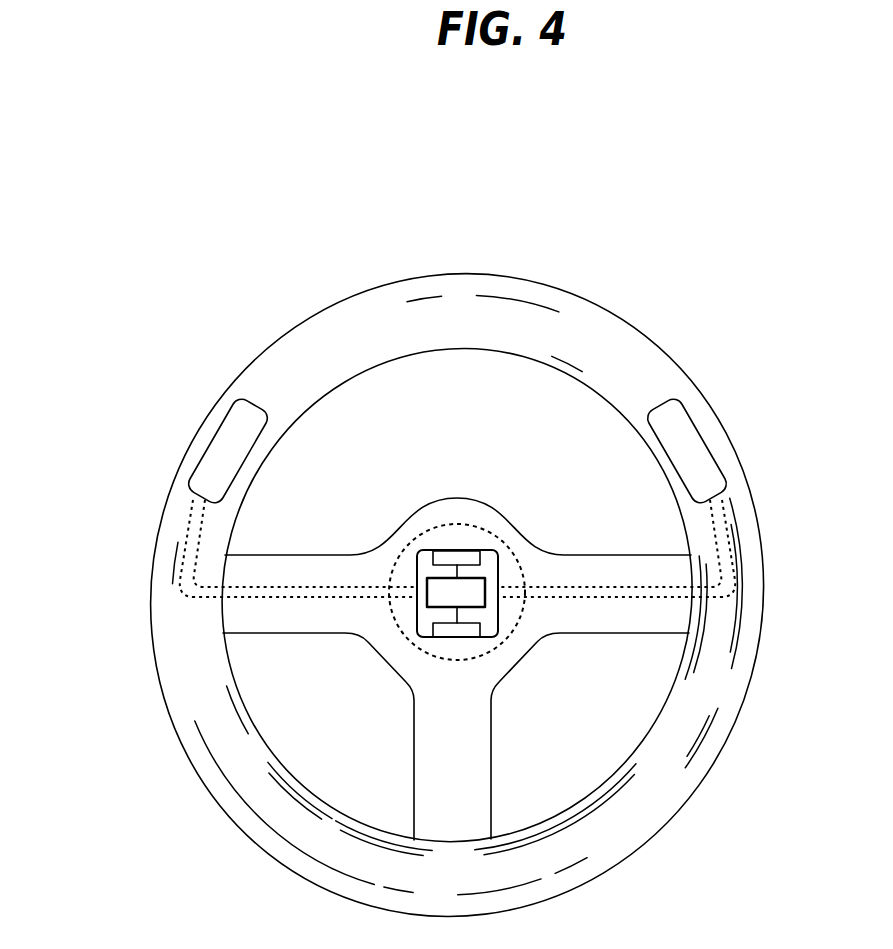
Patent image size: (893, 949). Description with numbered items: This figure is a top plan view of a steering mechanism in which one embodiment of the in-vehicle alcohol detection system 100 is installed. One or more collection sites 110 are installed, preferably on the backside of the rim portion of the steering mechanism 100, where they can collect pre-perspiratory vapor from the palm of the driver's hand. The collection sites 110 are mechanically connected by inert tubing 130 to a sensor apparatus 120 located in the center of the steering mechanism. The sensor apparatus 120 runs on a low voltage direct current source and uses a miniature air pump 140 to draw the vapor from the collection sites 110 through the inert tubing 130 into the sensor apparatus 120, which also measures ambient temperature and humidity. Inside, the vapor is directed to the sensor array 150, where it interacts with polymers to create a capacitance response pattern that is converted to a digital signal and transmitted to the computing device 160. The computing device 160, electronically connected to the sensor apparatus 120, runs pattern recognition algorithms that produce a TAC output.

The in-vehicle alcohol detection system 100 is at (650, 268).
The collection sites 110 is at (222, 418).
The sensor apparatus 120 is at (498, 608).
The inert tubing 130 is at (192, 514).
The miniature air pump 140 is at (498, 638).
The sensor array 150 is at (423, 600).
The computing device 160 is at (430, 557).